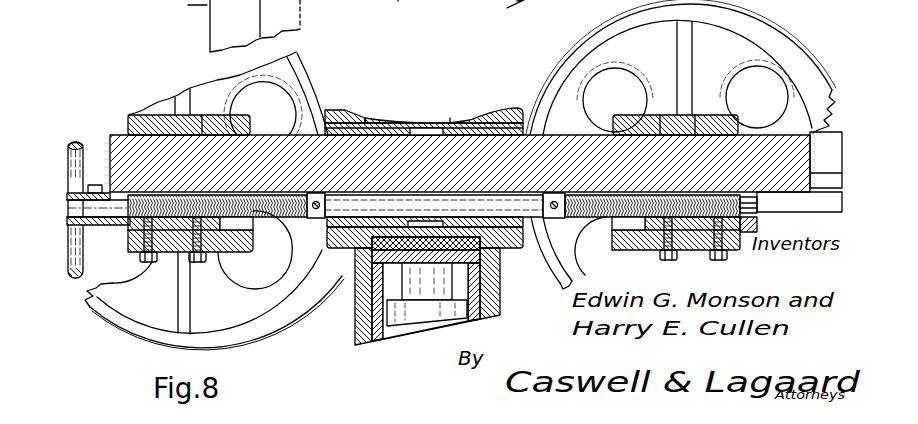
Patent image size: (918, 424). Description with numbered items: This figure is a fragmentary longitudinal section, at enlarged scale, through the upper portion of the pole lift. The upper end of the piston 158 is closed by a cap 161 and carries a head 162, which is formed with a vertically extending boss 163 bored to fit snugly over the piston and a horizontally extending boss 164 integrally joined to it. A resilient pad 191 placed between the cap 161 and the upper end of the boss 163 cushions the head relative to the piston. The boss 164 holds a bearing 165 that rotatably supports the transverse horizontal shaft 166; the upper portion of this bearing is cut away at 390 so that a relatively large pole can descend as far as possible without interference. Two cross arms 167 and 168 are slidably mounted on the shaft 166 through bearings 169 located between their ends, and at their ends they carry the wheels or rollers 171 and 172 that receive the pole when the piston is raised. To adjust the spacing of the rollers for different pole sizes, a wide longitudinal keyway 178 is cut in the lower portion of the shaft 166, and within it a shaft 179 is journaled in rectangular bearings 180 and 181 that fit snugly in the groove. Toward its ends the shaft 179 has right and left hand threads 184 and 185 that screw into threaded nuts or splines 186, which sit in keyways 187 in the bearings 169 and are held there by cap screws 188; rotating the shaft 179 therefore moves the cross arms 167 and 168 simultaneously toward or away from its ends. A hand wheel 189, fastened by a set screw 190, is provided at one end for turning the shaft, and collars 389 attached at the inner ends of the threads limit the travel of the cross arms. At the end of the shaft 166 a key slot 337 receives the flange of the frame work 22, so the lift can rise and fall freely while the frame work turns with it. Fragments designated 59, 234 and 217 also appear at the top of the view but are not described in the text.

The frame work 22 is at (185, 8).
The housing 59 is at (255, 26).
The bracket 234 is at (406, 6).
The support arm 217 is at (497, 9).
The piston 158 is at (375, 337).
The cap 161 is at (432, 255).
The head 162 is at (345, 118).
The vertically extending boss 163 is at (472, 287).
The horizontally extending boss 164 is at (480, 112).
The bearing 165 is at (460, 128).
The transverse horizontal shaft 166 is at (590, 130).
The cross arm 167 is at (145, 118).
The cross arm 168 is at (695, 115).
The bearings 169 is at (660, 115).
The roller 171 is at (118, 323).
The roller 172 is at (797, 55).
The keyway 178 is at (793, 196).
The shaft 179 is at (353, 207).
The bearing 180 is at (750, 195).
The bearing 181 is at (118, 135).
The right hand thread 184 is at (265, 195).
The left hand thread 185 is at (577, 200).
The threaded nuts or splines 186 is at (170, 220).
The keyways 187 is at (234, 225).
The cap screws 188 is at (140, 258).
The hand wheel 189 is at (75, 280).
The set screw 190 is at (95, 185).
The resilient pad 191 is at (412, 265).
The key slot 337 is at (826, 150).
The collars 389 is at (313, 218).
The cut away portion 390 is at (397, 118).